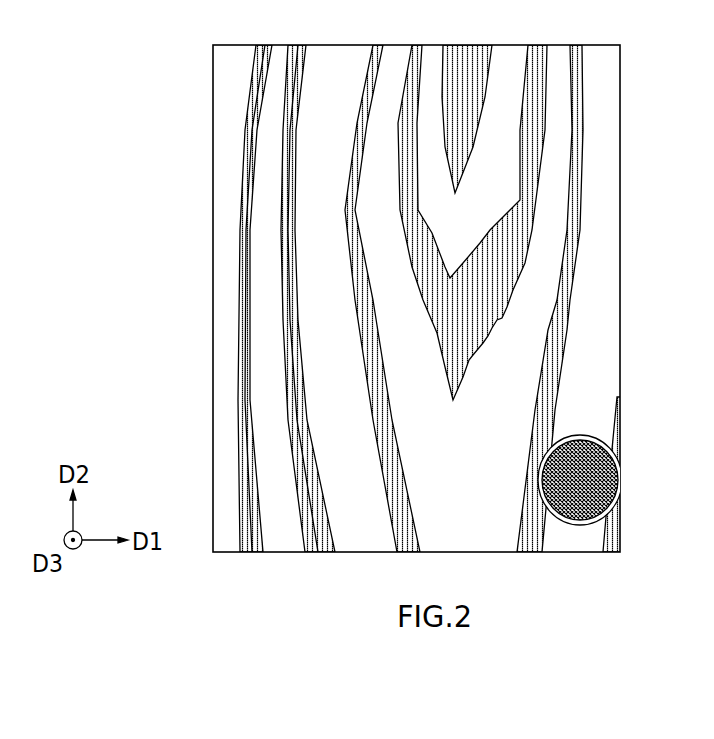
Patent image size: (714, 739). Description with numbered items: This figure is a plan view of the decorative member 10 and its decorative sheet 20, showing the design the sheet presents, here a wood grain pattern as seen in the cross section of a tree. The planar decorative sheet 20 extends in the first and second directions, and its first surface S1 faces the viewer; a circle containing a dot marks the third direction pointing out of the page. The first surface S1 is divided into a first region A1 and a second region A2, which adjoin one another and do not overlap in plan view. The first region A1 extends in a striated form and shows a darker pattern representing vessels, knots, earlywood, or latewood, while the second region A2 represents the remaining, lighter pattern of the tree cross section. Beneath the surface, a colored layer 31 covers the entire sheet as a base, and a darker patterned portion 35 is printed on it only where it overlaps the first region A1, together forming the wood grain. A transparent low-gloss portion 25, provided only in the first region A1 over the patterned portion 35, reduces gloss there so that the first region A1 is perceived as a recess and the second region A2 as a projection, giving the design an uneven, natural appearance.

The decorative member 10 is at (326, 298).
The decorative sheet 20 is at (326, 298).
The first surface S1 is at (160, 148).
The first region A1 is at (326, 298).
The low-gloss portion 25 is at (326, 298).
The patterned portion 35 is at (445, 332).
The second region A2 is at (346, 298).
The colored layer 31 is at (325, 393).